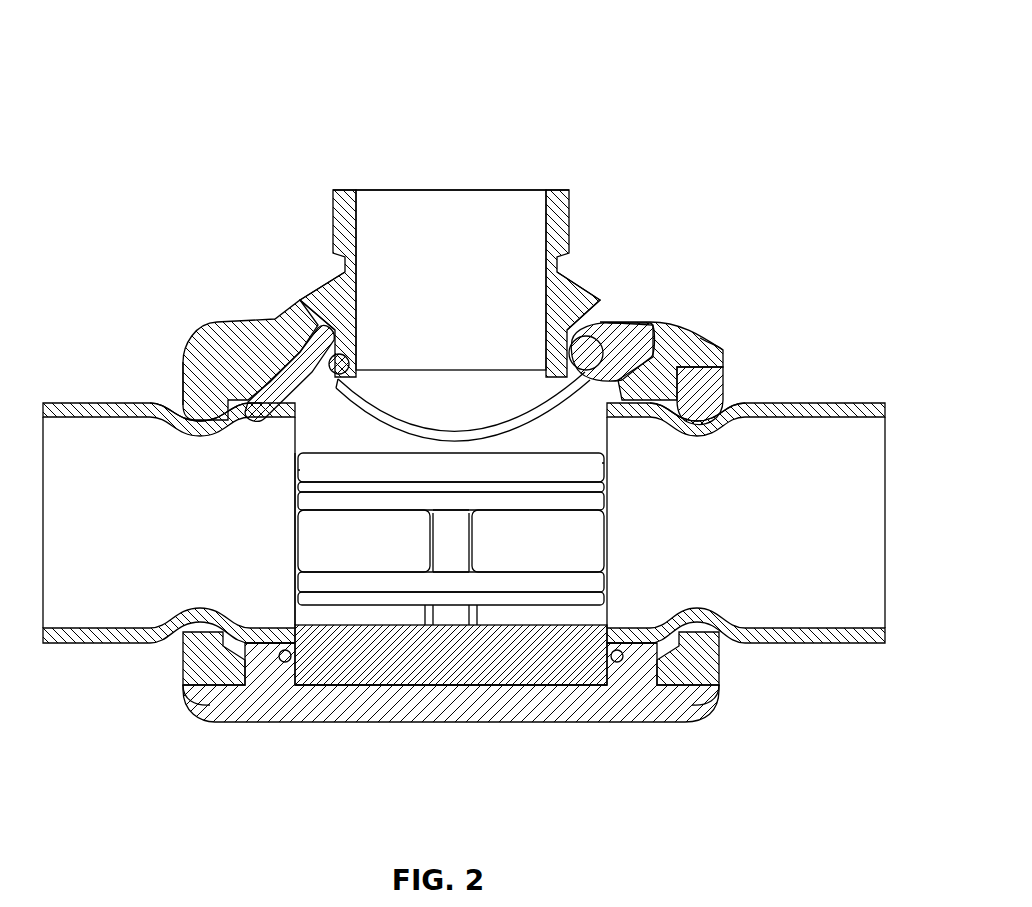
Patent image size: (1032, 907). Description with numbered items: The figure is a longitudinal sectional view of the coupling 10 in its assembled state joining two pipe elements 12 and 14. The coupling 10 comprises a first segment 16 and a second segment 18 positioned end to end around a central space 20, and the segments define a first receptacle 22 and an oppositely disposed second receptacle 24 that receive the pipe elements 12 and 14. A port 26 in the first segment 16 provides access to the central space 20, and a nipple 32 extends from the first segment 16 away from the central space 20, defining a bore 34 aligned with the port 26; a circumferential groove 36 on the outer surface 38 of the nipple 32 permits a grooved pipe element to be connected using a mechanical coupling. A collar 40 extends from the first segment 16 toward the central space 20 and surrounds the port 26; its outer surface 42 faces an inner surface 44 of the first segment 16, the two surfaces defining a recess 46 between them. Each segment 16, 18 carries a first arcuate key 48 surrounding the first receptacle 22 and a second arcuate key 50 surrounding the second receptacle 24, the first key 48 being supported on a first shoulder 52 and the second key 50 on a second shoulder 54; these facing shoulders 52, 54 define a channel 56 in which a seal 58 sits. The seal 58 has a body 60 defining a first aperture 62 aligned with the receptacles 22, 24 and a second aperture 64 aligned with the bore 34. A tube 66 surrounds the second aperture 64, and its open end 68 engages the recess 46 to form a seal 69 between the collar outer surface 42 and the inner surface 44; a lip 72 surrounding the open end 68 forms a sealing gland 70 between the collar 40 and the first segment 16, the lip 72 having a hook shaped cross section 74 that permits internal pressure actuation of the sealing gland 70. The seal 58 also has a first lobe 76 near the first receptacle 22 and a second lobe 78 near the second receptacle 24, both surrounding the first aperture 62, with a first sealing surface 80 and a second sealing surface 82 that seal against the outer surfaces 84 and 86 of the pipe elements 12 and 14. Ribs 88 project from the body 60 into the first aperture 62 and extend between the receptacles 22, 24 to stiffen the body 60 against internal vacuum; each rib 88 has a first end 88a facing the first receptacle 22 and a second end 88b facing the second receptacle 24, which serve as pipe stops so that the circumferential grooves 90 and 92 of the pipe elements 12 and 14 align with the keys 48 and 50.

The coupling 10 is at (190, 82).
The pipe element 12 is at (161, 577).
The pipe element 14 is at (763, 567).
The first segment 16 is at (667, 331).
The second segment 18 is at (451, 716).
The central space 20 is at (461, 522).
The first receptacle 22 is at (195, 566).
The second receptacle 24 is at (728, 557).
The port 26 is at (491, 243).
The nipple 32 is at (574, 197).
The bore 34 is at (432, 200).
The circumferential groove 36 is at (572, 257).
The outer surface 38 is at (574, 227).
The collar 40 is at (563, 325).
The outer surface 42 is at (358, 350).
The inner surface 44 is at (262, 322).
The recess 46 is at (261, 418).
The first arcuate key 48 is at (181, 365).
The second arcuate key 50 is at (724, 378).
The first shoulder 52 is at (212, 330).
The second shoulder 54 is at (702, 347).
The channel 56 is at (432, 688).
The seal 58 is at (520, 662).
The body 60 is at (588, 587).
The first aperture 62 is at (580, 543).
The second aperture 64 is at (296, 480).
The tube 66 is at (663, 322).
The open end 68 is at (298, 318).
The seal 69 is at (342, 352).
The sealing gland 70 is at (320, 332).
The lip 72 is at (355, 379).
The hook shaped cross section 74 is at (567, 362).
The first lobe 76 is at (272, 668).
The second lobe 78 is at (605, 700).
The first sealing surface 80 is at (277, 642).
The second sealing surface 82 is at (633, 634).
The outer surface 84 is at (120, 645).
The outer surface 86 is at (845, 644).
The ribs 88 is at (570, 472).
The first end 88a is at (296, 470).
The second end 88b is at (607, 463).
The circumferential groove 90 is at (185, 427).
The circumferential groove 92 is at (706, 428).